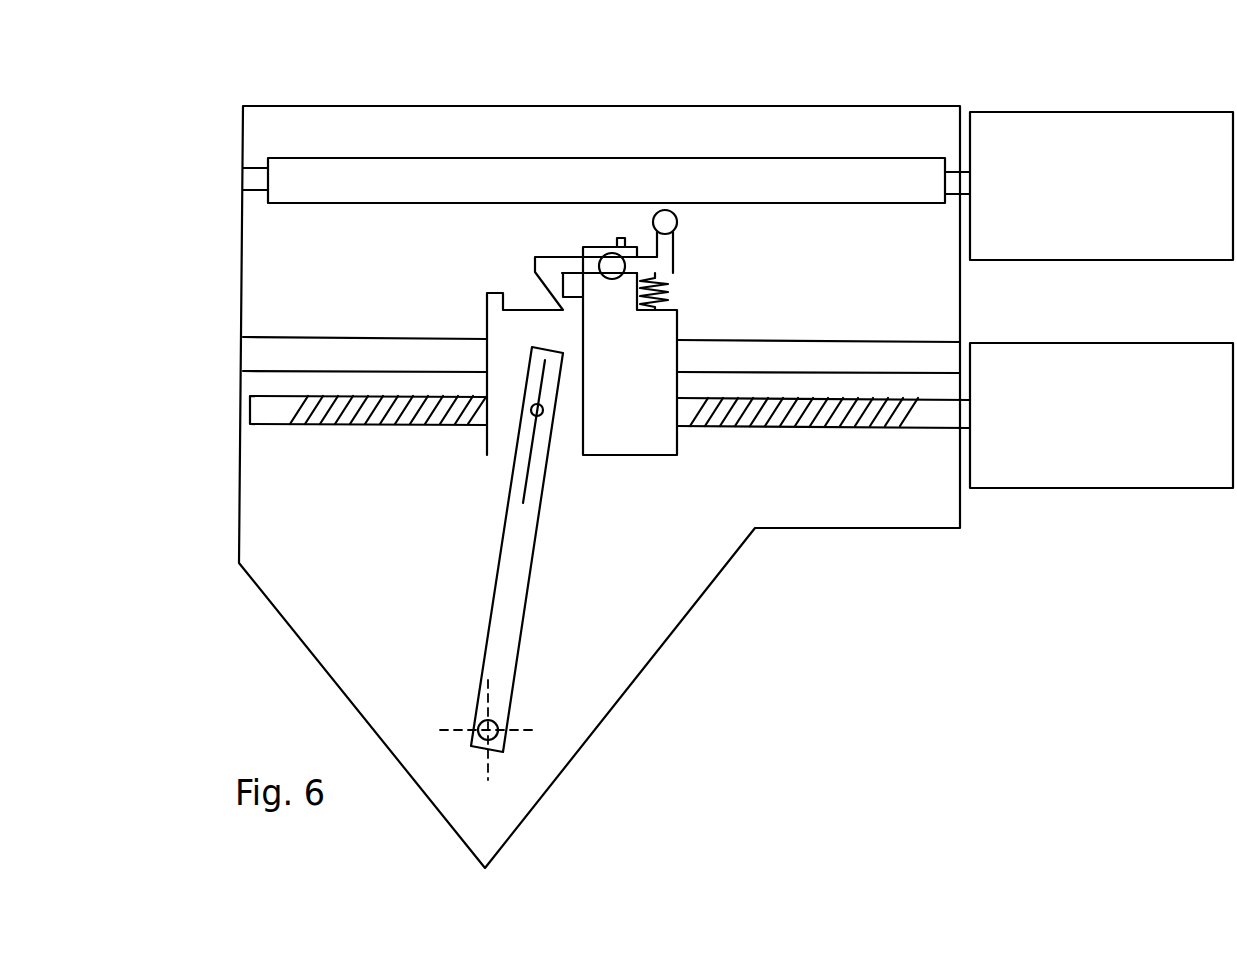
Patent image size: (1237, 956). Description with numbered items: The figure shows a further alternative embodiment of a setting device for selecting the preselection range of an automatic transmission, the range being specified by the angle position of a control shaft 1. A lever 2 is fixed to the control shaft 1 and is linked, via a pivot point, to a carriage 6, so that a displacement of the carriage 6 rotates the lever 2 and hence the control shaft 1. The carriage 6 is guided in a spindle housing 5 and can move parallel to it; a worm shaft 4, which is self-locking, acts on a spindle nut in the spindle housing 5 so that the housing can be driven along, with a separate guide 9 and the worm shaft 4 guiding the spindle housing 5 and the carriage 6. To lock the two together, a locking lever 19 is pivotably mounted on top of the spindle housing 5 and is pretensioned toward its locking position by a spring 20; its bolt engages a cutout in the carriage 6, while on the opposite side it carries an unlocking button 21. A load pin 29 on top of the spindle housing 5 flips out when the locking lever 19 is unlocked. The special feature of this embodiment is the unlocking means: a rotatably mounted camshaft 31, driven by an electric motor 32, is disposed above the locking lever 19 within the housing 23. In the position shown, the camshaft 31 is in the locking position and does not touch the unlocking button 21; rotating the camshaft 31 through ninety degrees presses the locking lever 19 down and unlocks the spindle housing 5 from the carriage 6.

The control shaft 1 is at (478, 723).
The lever 2 is at (500, 628).
The worm shaft 4 is at (805, 422).
The spindle housing 5 is at (1045, 465).
The carriage 6 is at (497, 328).
The guide 9 is at (812, 352).
The locking lever 19 is at (678, 272).
The spring 20 is at (670, 287).
The unlocking button 21 is at (677, 231).
The housing 23 is at (617, 645).
The load pin 29 is at (613, 243).
The camshaft 31 is at (587, 182).
The electric motor 32 is at (1020, 127).